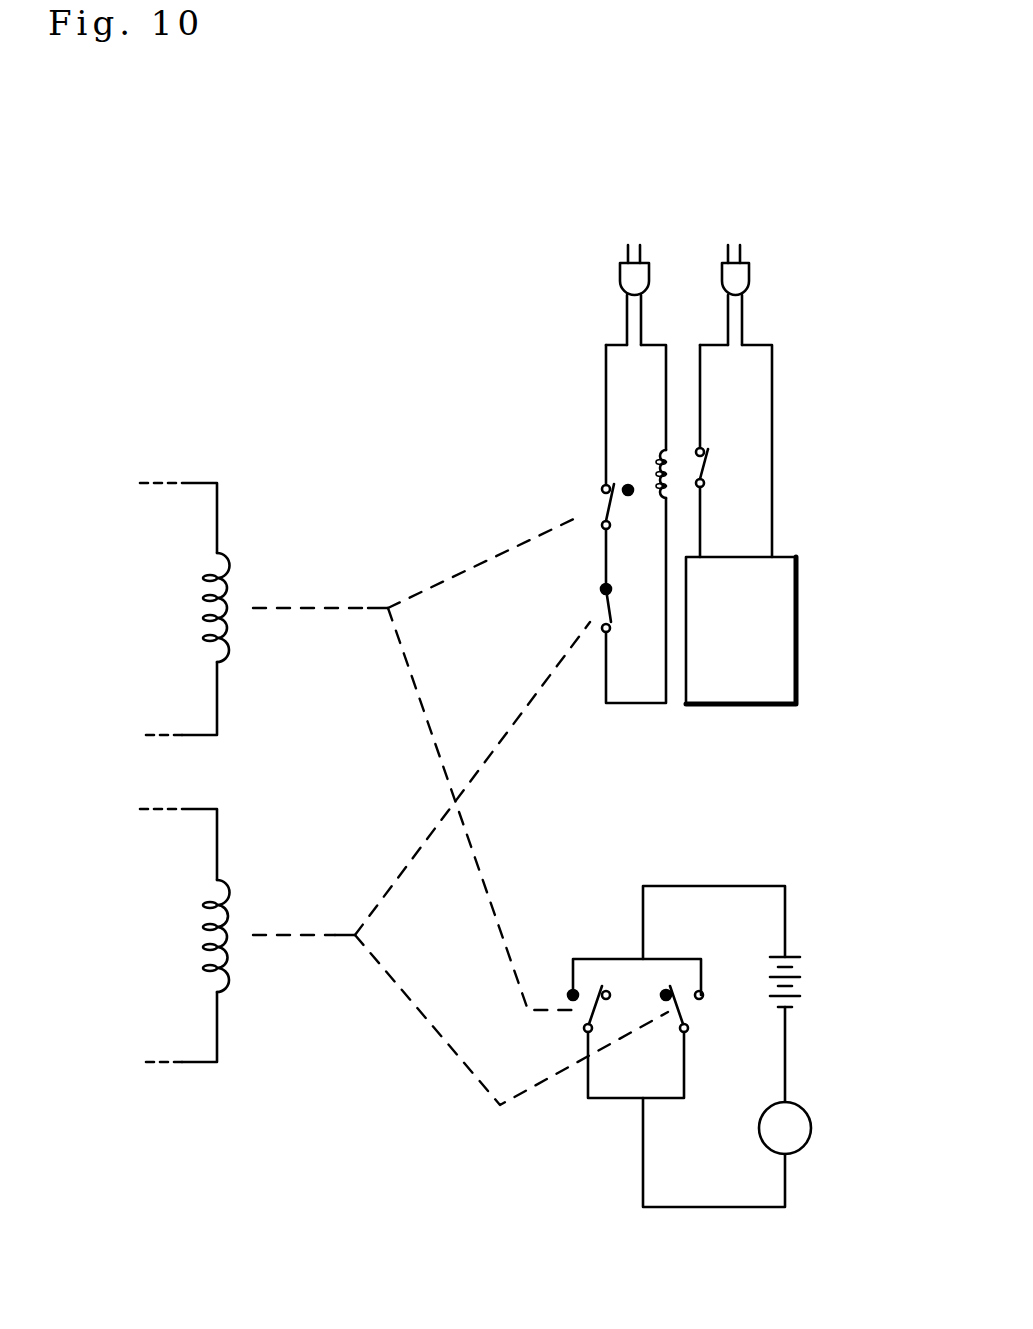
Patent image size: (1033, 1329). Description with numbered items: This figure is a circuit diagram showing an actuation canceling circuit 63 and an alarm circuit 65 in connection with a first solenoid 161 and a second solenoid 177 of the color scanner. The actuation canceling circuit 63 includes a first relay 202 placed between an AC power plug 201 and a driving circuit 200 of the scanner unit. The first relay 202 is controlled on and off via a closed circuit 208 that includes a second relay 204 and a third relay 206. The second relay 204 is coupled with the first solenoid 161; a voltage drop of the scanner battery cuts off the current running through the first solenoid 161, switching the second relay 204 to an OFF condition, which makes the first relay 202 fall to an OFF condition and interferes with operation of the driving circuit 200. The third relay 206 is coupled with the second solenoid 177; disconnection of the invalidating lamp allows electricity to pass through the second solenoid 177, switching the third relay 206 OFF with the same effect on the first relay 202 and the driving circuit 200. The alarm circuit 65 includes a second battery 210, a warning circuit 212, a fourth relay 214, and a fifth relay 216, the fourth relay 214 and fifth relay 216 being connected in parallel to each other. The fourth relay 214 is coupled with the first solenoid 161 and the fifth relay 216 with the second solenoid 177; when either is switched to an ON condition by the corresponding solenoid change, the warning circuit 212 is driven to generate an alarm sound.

The actuation canceling circuit 63 is at (796, 373).
The alarm circuit 65 is at (794, 867).
The first solenoid 161 is at (238, 575).
The second solenoid 177 is at (240, 908).
The driving circuit 200 is at (797, 626).
The AC power plug 201 is at (749, 283).
The first relay 202 is at (713, 463).
The second relay 204 is at (592, 497).
The third relay 206 is at (593, 632).
The closed circuit 208 is at (643, 707).
The second battery 210 is at (805, 990).
The warning circuit 212 is at (807, 1112).
The fourth relay 214 is at (578, 1018).
The fifth relay 216 is at (701, 1015).